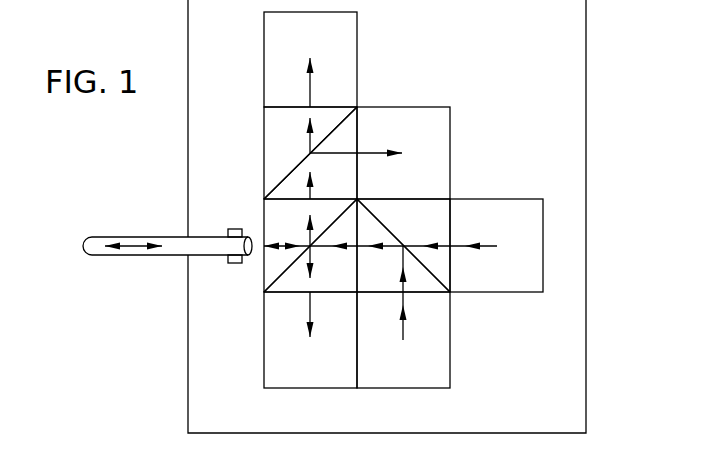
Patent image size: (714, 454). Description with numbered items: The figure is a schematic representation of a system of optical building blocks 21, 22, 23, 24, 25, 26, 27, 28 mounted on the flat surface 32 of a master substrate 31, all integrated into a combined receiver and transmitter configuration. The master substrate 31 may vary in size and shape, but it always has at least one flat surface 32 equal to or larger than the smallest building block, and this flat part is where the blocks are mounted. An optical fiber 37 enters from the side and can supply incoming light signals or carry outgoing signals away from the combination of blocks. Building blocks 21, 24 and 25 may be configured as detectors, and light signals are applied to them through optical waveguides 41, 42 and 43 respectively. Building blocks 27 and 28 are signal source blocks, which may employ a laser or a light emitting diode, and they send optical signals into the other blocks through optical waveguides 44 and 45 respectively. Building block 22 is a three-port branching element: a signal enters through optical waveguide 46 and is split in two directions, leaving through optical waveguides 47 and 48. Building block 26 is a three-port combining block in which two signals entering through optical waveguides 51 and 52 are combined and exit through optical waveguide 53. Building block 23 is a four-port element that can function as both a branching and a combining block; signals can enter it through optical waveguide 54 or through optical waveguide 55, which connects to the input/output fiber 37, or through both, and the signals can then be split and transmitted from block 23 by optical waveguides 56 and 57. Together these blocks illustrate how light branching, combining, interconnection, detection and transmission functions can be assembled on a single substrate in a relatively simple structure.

The building block 21 is at (348, 57).
The building block 22 is at (275, 151).
The building block 23 is at (275, 214).
The building block 24 is at (275, 347).
The building block 25 is at (438, 153).
The building block 26 is at (455, 191).
The building block 27 is at (440, 341).
The building block 28 is at (518, 210).
The master substrate 31 is at (597, 68).
The surface 32 is at (541, 60).
The optical fiber 37 is at (122, 235).
The optical waveguide 41 is at (306, 96).
The optical waveguide 42 is at (313, 308).
The optical waveguide 43 is at (368, 156).
The optical waveguide 44 is at (407, 298).
The optical waveguide 45 is at (483, 248).
The optical waveguide 46 is at (312, 163).
The optical waveguide 47 is at (307, 150).
The optical waveguide 48 is at (328, 152).
The optical waveguide 51 is at (398, 251).
The optical waveguide 52 is at (412, 243).
The optical waveguide 53 is at (390, 243).
The optical waveguide 54 is at (313, 248).
The optical waveguide 55 is at (280, 257).
The optical waveguide 56 is at (308, 239).
The optical waveguide 57 is at (320, 258).